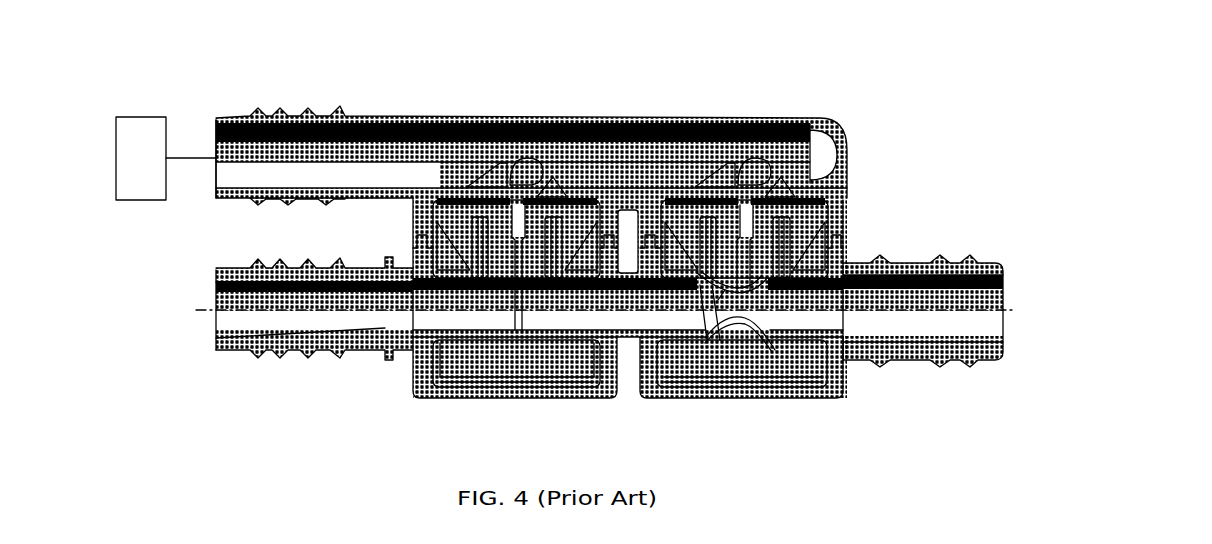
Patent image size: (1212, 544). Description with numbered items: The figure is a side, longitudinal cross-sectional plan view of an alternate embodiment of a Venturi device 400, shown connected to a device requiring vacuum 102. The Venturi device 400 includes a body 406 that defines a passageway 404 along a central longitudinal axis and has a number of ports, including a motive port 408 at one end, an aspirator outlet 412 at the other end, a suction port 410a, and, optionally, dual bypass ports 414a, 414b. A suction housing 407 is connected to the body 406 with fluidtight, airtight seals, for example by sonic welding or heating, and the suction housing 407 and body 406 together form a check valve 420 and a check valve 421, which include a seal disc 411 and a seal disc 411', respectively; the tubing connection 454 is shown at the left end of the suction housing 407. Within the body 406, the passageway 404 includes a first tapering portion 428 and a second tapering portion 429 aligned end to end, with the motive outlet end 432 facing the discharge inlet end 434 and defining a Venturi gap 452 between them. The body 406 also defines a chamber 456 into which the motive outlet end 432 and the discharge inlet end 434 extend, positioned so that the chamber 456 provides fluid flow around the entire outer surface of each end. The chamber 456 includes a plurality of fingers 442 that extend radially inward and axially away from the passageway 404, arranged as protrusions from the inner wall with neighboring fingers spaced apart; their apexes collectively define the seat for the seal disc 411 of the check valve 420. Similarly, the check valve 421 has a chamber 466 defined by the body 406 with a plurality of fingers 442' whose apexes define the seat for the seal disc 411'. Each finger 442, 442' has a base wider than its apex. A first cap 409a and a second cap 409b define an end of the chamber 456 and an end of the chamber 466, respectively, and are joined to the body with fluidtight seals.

The Venturi device 400 is at (514, 72).
The device requiring vacuum 102 is at (157, 170).
The tubing connection 454 is at (215, 130).
The suction housing 407 is at (617, 118).
The check valve 421 is at (661, 272).
The check valve 420 is at (408, 231).
The fingers 442 is at (511, 209).
The fingers 442' is at (740, 208).
The seal disc 411 is at (517, 167).
The seal disc 411' is at (751, 170).
The suction port 410a is at (598, 245).
The body 406 is at (849, 268).
The discharge inlet end 434 is at (525, 288).
The bypass port 414a is at (760, 291).
The bypass port 414b is at (762, 340).
The motive outlet end 432 is at (506, 333).
The first tapering portion 428 is at (457, 339).
The second tapering portion 429 is at (580, 339).
The passageway 404 is at (377, 327).
The motive port 408 is at (212, 327).
The aspirator outlet 412 is at (1004, 334).
The chamber 456 is at (435, 358).
The Venturi gap 452 is at (517, 343).
The first cap 409a is at (568, 396).
The second cap 409b is at (752, 396).
The chamber 466 is at (707, 360).